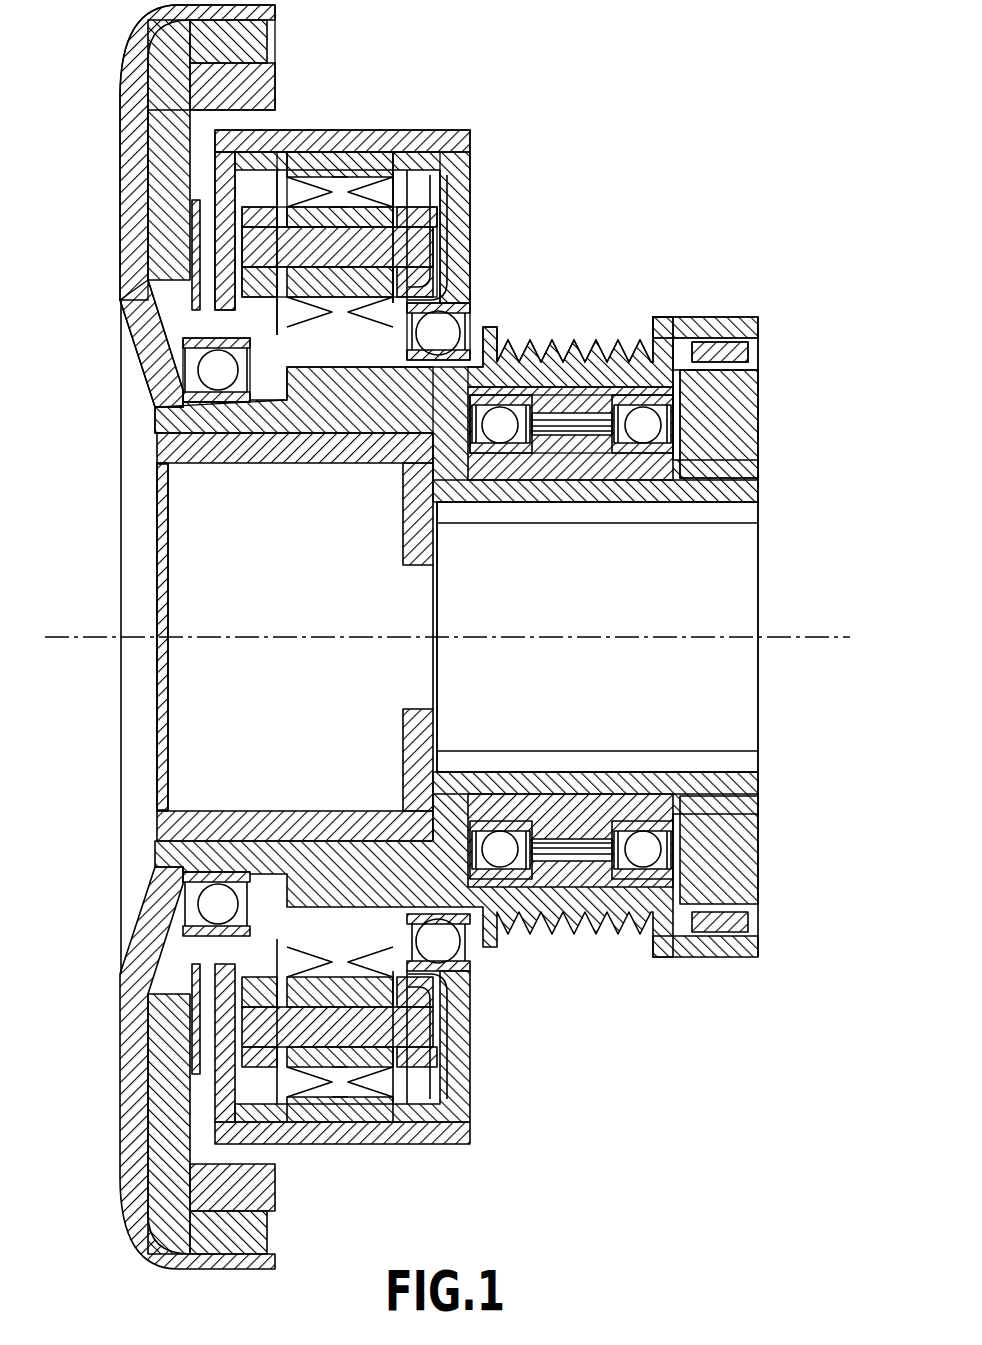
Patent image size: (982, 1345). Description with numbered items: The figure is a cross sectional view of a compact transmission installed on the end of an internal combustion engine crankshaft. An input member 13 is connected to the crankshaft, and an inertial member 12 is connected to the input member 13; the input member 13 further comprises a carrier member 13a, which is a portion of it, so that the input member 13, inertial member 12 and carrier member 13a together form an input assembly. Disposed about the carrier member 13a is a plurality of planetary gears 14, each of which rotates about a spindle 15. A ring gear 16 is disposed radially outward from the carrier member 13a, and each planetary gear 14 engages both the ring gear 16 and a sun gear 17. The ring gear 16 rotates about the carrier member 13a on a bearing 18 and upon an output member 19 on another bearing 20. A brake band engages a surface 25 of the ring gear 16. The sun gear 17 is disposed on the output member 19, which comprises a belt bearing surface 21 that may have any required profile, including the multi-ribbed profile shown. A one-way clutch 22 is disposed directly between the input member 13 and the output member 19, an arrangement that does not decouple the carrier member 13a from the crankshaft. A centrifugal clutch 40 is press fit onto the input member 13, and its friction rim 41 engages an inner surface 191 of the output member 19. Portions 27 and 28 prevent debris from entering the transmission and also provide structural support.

The inertial member 12 is at (148, 40).
The input member 13 is at (707, 558).
The carrier member 13a is at (250, 298).
The planetary gear 14 is at (385, 158).
The spindle 15 is at (417, 242).
The ring gear 16 is at (318, 152).
The sun gear 17 is at (330, 345).
The bearing 18 is at (218, 370).
The output member 19 is at (745, 317).
The inner surface 191 is at (702, 338).
The bearing 20 is at (443, 330).
The belt bearing surface 21 is at (540, 385).
The one-way clutch 22 is at (592, 397).
The surface 25 is at (352, 157).
The portion 27 is at (226, 160).
The portion 28 is at (470, 165).
The centrifugal clutch 40 is at (762, 410).
The friction rim 41 is at (748, 350).